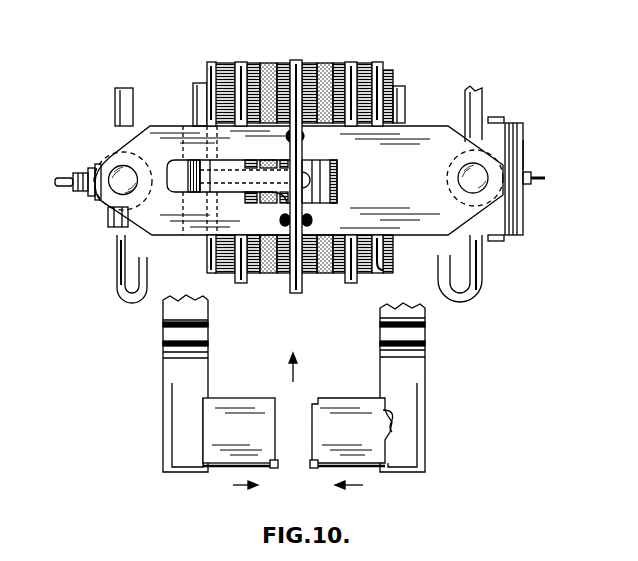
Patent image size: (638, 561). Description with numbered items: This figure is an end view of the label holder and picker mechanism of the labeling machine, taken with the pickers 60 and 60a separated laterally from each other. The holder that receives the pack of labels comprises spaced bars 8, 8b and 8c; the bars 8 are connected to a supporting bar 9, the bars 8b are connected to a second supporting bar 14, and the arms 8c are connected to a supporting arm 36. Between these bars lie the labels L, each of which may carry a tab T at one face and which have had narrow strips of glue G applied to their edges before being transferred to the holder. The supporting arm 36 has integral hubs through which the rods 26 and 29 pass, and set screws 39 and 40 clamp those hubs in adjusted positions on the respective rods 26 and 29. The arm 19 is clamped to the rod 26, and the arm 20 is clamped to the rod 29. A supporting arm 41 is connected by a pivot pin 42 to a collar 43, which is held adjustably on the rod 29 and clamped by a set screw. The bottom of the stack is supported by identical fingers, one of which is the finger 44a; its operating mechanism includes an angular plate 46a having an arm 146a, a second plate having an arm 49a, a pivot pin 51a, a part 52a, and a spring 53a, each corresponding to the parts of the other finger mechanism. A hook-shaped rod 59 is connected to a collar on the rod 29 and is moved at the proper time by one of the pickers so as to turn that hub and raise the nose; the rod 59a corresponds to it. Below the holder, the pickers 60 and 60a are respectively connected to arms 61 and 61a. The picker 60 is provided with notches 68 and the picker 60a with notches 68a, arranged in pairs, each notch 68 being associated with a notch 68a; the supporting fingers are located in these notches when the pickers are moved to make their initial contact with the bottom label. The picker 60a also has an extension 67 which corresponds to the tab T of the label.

The spaced bar 8 is at (212, 63).
The label L is at (228, 63).
The spaced bar 8c is at (240, 62).
The glue G is at (273, 63).
The spaced bar 8b is at (378, 63).
The tab T is at (394, 70).
The second supporting bar 14 is at (410, 93).
The arm 20 is at (480, 93).
The arm 19 is at (118, 103).
The supporting bar 9 is at (196, 97).
The supporting arm 36 is at (420, 130).
The supporting arm 41 is at (523, 130).
The collar 43 is at (523, 157).
The set screw 40 is at (545, 178).
The pivot pin 42 is at (505, 238).
The rod 26 is at (118, 171).
The rod 29 is at (458, 178).
The set screw 39 is at (60, 185).
The pivot pin 51a is at (268, 160).
The clamp block 52a is at (337, 168).
The spring 53a is at (305, 136).
The finger 44a is at (286, 302).
The angular plate 46a is at (290, 208).
The arm 146a is at (190, 192).
The arm 49a is at (308, 216).
The hook-shaped rod 59a is at (118, 242).
The hook-shaped rod 59 is at (480, 262).
The arm 61 is at (172, 337).
The arm 61a is at (425, 337).
The picker 60 is at (228, 463).
The picker 60a is at (378, 463).
The notch 68 is at (283, 386).
The notch 68a is at (313, 400).
The extension 67 is at (394, 419).